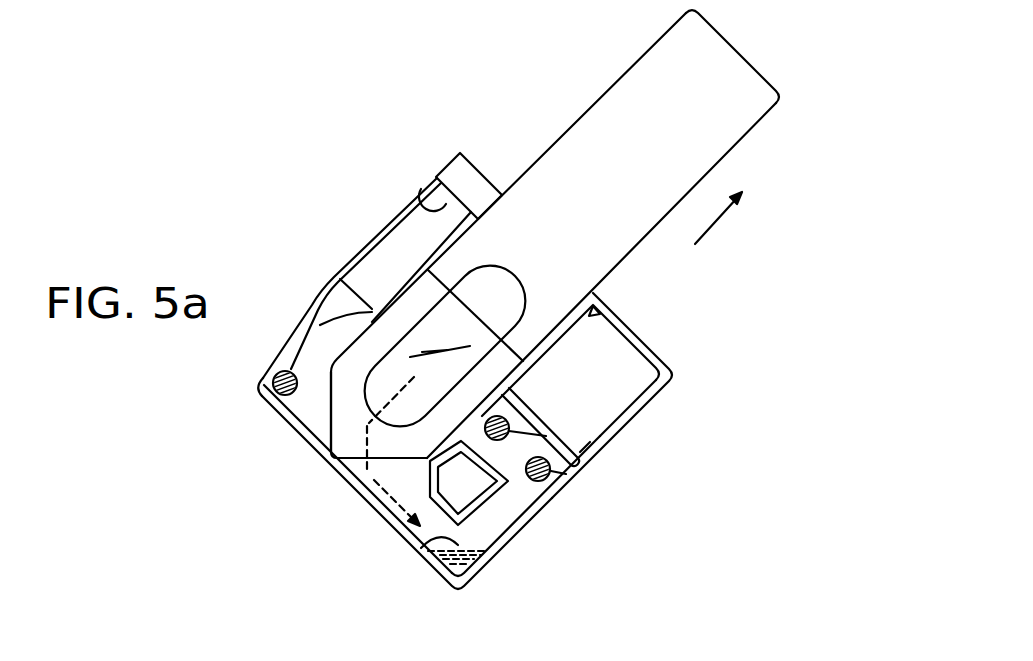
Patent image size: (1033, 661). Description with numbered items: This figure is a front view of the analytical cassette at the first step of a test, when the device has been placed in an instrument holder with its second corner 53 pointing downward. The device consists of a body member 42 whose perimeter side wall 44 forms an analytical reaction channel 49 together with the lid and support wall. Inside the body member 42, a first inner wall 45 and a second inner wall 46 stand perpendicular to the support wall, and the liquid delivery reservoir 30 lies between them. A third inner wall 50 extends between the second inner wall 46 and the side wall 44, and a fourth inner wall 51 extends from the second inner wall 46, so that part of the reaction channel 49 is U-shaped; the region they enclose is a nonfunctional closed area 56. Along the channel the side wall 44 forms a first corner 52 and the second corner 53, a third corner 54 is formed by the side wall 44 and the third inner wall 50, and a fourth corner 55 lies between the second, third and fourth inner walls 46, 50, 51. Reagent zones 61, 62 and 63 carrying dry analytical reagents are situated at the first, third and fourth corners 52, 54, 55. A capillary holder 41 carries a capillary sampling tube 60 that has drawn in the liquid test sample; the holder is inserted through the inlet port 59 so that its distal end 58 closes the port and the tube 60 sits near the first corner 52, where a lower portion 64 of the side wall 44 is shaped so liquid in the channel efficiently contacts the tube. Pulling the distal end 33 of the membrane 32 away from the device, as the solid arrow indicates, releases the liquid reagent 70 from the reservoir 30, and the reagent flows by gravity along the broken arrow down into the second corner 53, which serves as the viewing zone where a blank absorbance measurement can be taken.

The liquid delivery reservoir 30 is at (328, 434).
The membrane 32 is at (710, 150).
The distal end of membrane 33 is at (745, 45).
The capillary holder 41 is at (403, 237).
The body member 42 is at (673, 385).
The perimeter side wall 44 is at (357, 250).
The first inner wall 45 is at (322, 296).
The second inner wall 46 is at (590, 322).
The analytical reaction channel 49 is at (387, 480).
The third inner wall 50 is at (632, 417).
The fourth inner wall 51 is at (482, 514).
The first corner 52 is at (258, 391).
The second corner 53 is at (473, 567).
The third corner 54 is at (590, 442).
The fourth corner 55 is at (505, 395).
The closed area 56 is at (618, 363).
The distal end of capillary holder 58 is at (455, 168).
The inlet port 59 is at (423, 190).
The capillary sampling tube 60 is at (280, 366).
The reagent zone 61 is at (292, 414).
The reagent zone 62 is at (550, 477).
The reagent zone 63 is at (558, 442).
The lower portion of side wall 64 is at (302, 317).
The liquid reagent 70 is at (427, 540).